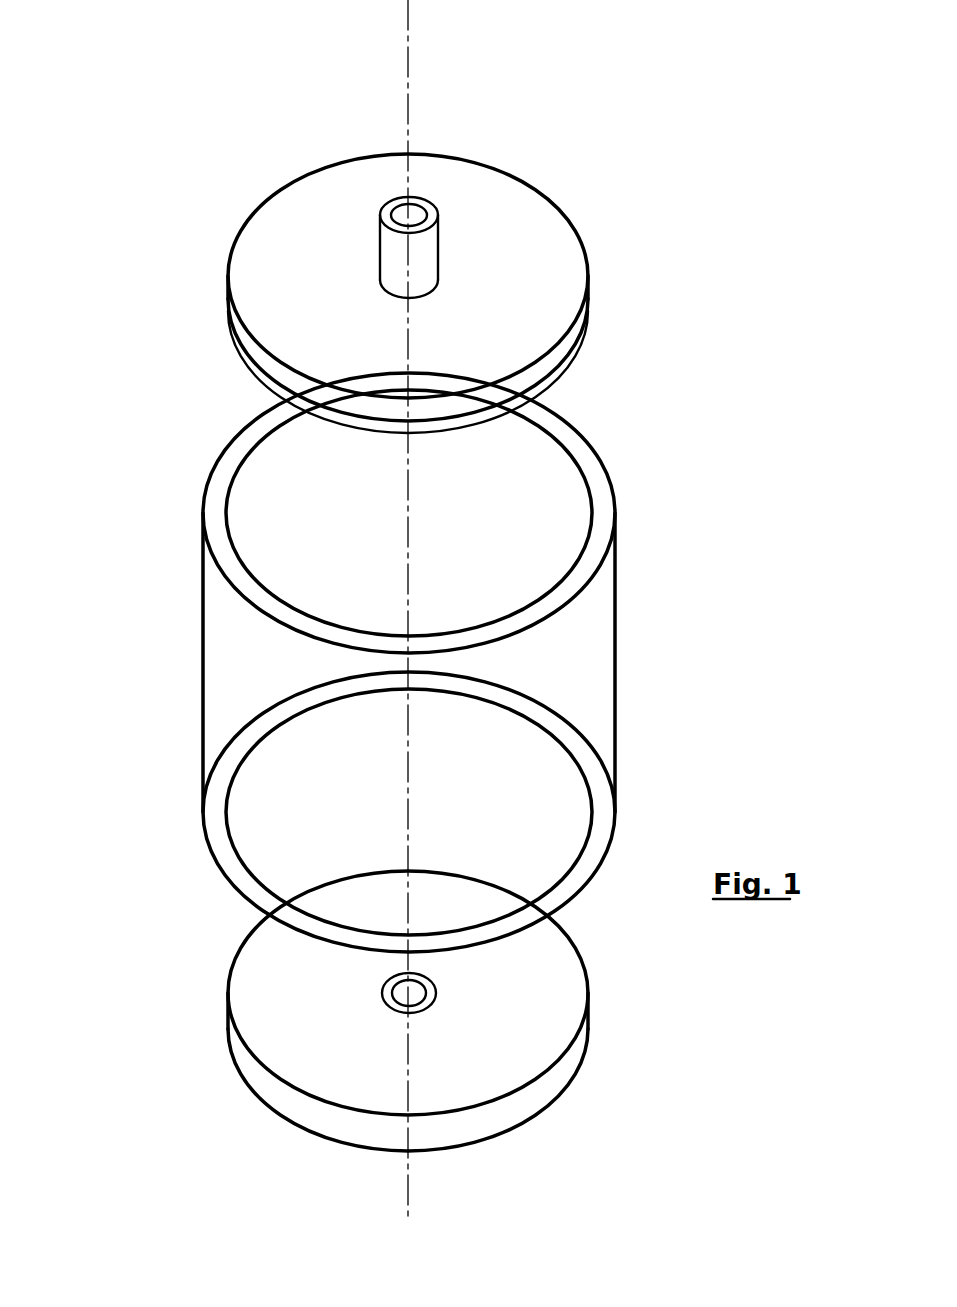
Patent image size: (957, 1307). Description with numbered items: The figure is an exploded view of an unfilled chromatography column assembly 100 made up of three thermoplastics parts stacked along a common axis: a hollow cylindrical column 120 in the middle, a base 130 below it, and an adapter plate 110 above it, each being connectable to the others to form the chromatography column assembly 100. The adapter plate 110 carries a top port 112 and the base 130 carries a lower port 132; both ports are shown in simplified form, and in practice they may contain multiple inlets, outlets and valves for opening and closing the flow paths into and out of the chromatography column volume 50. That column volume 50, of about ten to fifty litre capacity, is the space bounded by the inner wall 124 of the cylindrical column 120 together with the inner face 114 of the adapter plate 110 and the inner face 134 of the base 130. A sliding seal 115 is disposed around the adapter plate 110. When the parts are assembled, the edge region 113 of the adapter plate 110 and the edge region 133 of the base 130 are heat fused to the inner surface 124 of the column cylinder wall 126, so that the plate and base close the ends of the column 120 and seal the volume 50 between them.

The chromatography column assembly 100 is at (410, 610).
The adapter plate 110 is at (414, 276).
The top port 112 is at (430, 248).
The edge region of the adapter plate 113 is at (567, 347).
The inner face of the adapter plate 114 is at (565, 382).
The sliding seal 115 is at (272, 373).
The cylindrical column 120 is at (404, 662).
The inner wall 124 is at (573, 537).
The column cylinder wall 126 is at (590, 637).
The chromatography column volume 50 is at (359, 562).
The base 130 is at (385, 1011).
The lower port 132 is at (430, 1008).
The edge region of the base 133 is at (567, 1070).
The inner face of the base 134 is at (525, 970).